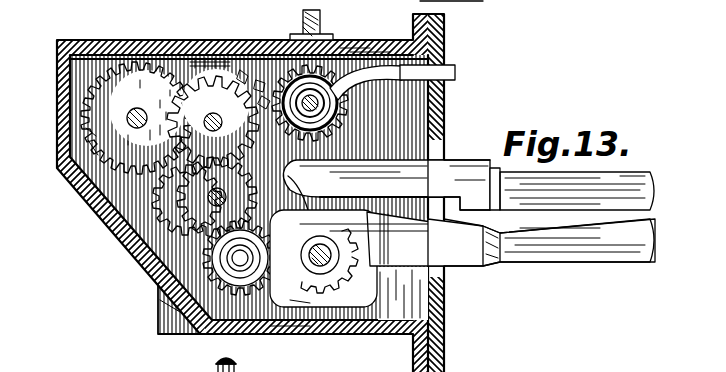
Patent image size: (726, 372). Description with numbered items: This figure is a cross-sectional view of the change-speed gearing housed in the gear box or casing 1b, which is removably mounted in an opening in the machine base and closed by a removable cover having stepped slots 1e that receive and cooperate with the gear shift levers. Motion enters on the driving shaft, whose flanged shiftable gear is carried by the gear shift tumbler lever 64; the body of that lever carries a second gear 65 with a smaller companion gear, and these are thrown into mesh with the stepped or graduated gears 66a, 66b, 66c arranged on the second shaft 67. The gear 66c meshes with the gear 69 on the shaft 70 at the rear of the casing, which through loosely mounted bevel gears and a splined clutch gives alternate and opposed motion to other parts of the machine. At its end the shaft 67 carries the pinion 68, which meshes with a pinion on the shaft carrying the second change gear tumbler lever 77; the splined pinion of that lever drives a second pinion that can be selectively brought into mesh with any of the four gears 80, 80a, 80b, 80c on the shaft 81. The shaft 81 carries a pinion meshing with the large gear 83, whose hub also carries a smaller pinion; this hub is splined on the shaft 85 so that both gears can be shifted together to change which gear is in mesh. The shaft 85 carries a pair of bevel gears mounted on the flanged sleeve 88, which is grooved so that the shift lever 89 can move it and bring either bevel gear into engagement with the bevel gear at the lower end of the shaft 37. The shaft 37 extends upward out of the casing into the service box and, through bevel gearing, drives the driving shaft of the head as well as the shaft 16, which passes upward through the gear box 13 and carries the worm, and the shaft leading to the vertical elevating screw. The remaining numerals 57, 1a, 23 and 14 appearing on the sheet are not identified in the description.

The shaft 16 is at (363, 193).
The shaft 70 is at (118, 117).
The gear 69 is at (118, 142).
The gear 80 is at (216, 62).
The gear 80a is at (244, 58).
The gear 80b is at (263, 77).
The gear 80c is at (273, 78).
The shaft 81 is at (197, 54).
The stepped gear 66a is at (205, 242).
The stepped gear 66b is at (178, 210).
The stepped gear 66c is at (165, 194).
The second gear 65 is at (147, 300).
The large gear 83 is at (353, 112).
The shift lever 89 is at (446, 80).
The shaft 37 is at (321, 25).
The flanged sleeve 88 is at (345, 52).
The shaft 85 is at (357, 53).
The second shaft 67 is at (363, 185).
The pinion 68 is at (357, 265).
The pivot 57 is at (321, 266).
The stepped slots 1e is at (435, 176).
The second change gear tumbler lever 77 is at (624, 183).
The gear shift tumbler lever 64 is at (542, 250).
The gear box or casing 1b is at (279, 337).
The housing portion 1a is at (21, 370).
The section line 23 is at (92, 10).
The section line 14 is at (494, 13).
The gear box 13 is at (139, 8).